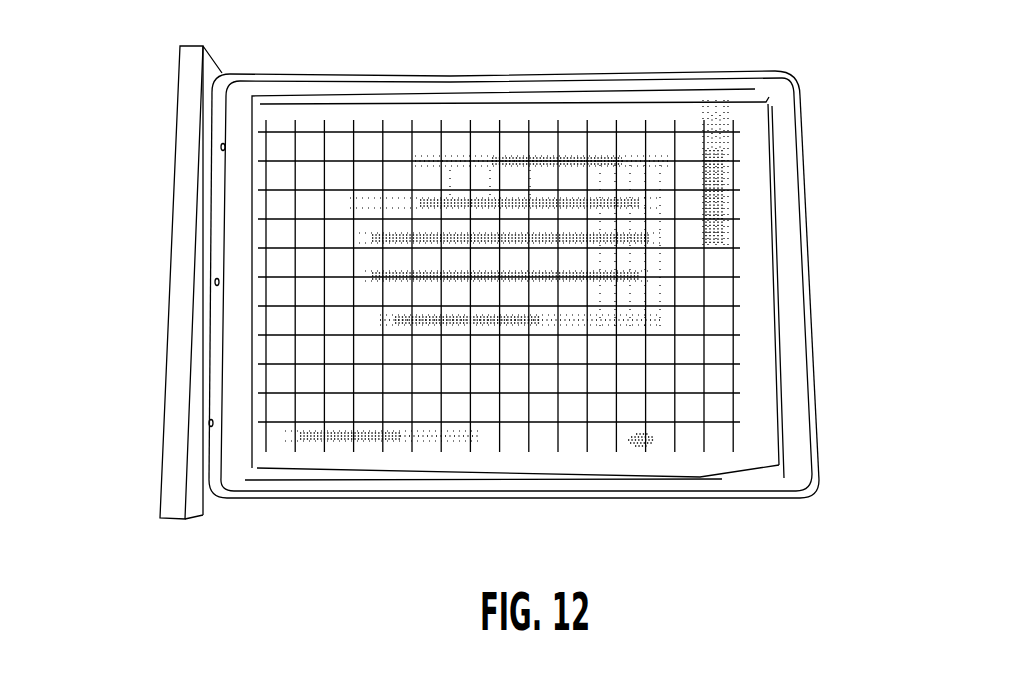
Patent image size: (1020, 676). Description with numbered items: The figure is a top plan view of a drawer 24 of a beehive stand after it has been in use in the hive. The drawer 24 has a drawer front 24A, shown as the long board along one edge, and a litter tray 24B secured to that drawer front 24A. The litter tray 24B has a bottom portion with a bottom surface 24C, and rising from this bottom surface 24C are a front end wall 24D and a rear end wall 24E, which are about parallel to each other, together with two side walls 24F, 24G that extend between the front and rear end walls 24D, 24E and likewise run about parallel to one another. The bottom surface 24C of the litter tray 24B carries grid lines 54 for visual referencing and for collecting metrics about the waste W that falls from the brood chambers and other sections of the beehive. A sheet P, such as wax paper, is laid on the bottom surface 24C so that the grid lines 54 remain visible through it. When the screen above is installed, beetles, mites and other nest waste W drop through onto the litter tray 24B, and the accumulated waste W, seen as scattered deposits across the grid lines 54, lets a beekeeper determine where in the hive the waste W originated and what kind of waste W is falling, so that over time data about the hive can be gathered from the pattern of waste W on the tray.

The drawer 24 is at (212, 548).
The drawer front 24A is at (180, 485).
The litter tray 24B is at (783, 110).
The bottom surface 24C is at (245, 263).
The front end wall 24D is at (802, 233).
The rear end wall 24E is at (225, 113).
The side wall 24F is at (450, 80).
The side wall 24G is at (520, 500).
The sheet P is at (766, 100).
The grid lines 54 is at (732, 420).
The waste W is at (543, 320).